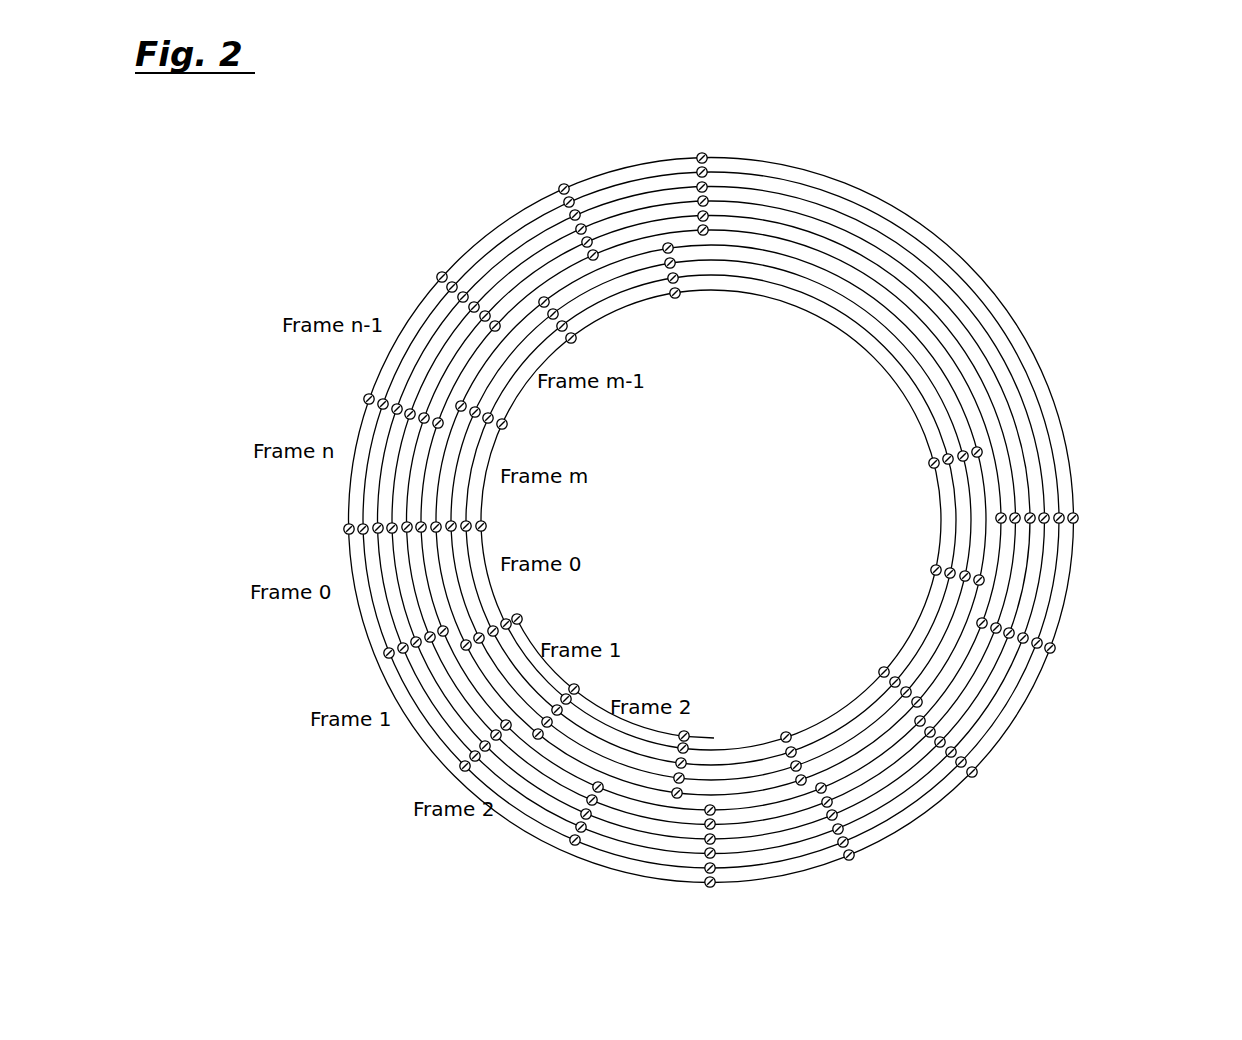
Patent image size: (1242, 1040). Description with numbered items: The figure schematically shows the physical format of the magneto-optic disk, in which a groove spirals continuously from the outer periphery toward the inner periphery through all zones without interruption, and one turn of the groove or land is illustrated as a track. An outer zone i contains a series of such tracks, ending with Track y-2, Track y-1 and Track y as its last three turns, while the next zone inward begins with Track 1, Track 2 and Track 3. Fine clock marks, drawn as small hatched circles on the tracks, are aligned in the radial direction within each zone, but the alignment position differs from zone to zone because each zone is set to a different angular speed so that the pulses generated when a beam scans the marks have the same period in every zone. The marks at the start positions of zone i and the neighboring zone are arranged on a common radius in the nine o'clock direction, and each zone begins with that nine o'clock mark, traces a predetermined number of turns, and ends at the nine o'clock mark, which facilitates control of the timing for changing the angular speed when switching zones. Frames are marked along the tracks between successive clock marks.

The track Track 1 is at (960, 633).
The track Track 2 is at (935, 652).
The track Track 3 is at (910, 668).
The track Track y is at (997, 473).
The track Track y-1 is at (1013, 490).
The track Track y-2 is at (1030, 503).
The zone zone i is at (796, 520).